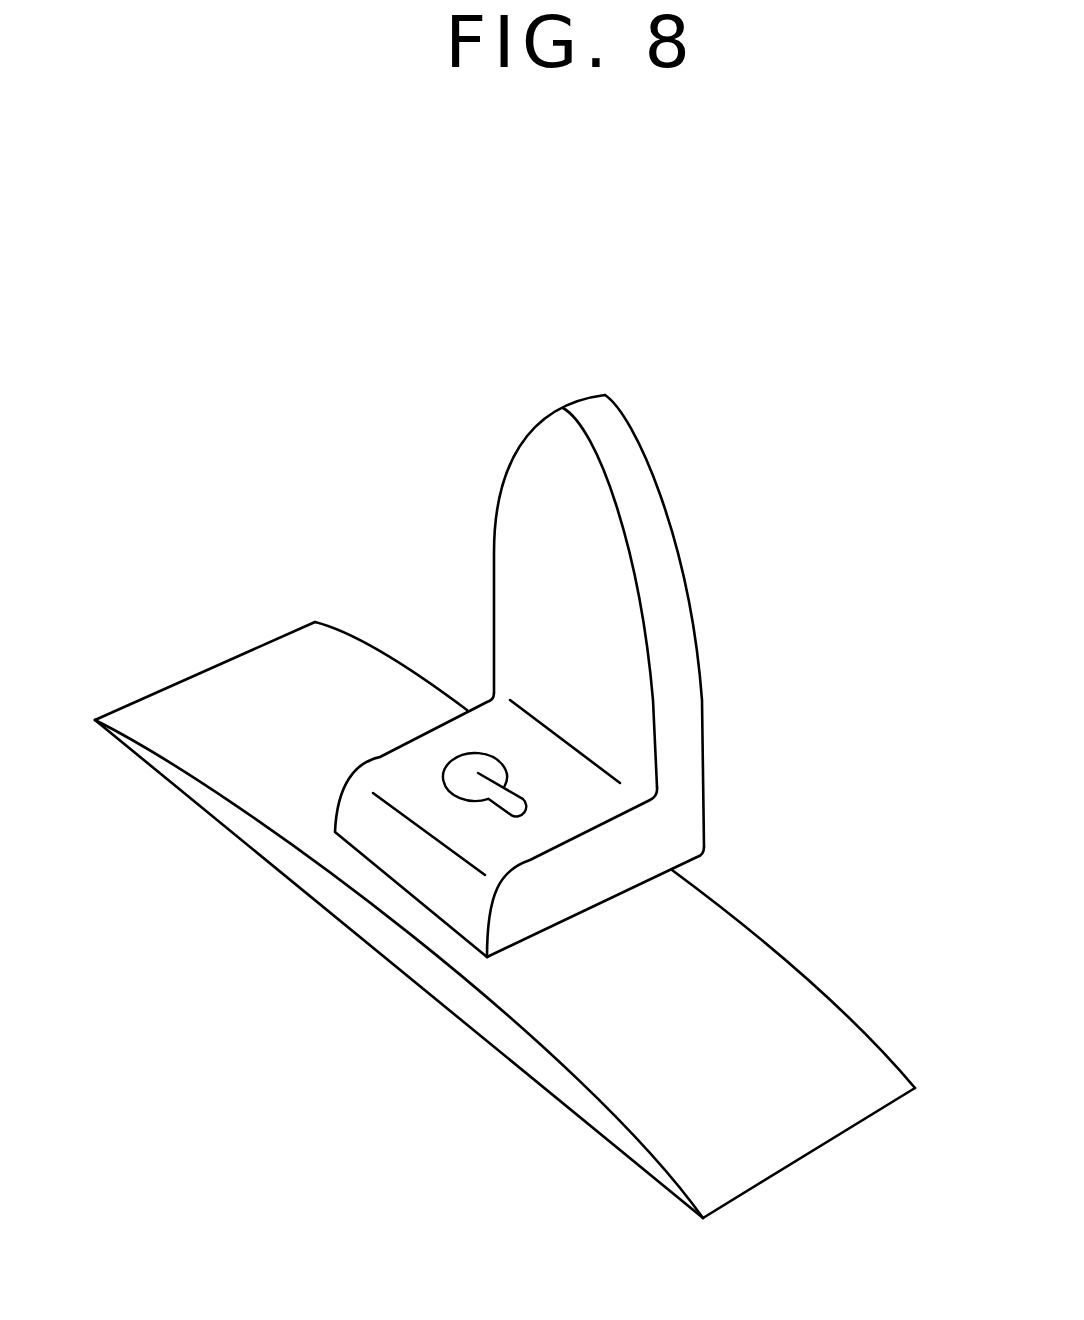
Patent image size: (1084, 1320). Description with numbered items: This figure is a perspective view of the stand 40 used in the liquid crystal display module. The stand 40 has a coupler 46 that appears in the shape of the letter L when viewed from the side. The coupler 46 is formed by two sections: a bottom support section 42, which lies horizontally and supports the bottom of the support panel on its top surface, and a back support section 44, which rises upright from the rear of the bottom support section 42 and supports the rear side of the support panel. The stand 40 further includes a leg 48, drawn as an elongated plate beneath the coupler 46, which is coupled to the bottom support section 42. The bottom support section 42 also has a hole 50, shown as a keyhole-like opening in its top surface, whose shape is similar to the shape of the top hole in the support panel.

The stand 40 is at (639, 585).
The bottom support section 42 is at (587, 747).
The back support section 44 is at (682, 770).
The coupler 46 is at (639, 676).
The leg 48 is at (762, 985).
The hole 50 is at (474, 752).